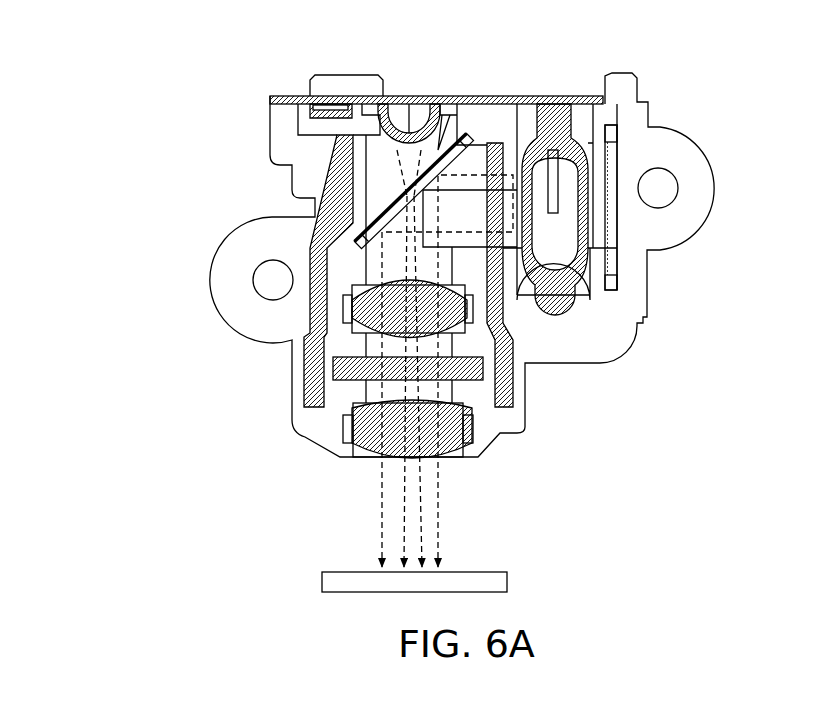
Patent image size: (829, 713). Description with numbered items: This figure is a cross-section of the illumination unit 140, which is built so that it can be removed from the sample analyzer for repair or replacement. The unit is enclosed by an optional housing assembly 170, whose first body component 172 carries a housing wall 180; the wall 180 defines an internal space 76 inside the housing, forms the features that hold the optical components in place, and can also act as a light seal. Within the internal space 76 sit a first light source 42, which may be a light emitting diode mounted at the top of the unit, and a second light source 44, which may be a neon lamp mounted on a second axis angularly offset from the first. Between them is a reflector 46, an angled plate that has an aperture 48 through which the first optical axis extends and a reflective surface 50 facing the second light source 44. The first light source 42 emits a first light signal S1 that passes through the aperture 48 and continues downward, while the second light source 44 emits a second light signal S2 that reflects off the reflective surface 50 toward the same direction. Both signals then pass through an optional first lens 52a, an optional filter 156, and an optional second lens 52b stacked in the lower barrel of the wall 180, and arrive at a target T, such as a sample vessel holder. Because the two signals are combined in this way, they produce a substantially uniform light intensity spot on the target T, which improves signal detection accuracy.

The illumination unit 140 is at (250, 63).
The housing assembly 170 is at (263, 137).
The first body component 172 is at (257, 324).
The housing wall 180 is at (303, 388).
The first light source 42 is at (413, 107).
The reflector 46 is at (391, 199).
The reflective surface 50 is at (383, 241).
The aperture 48 is at (422, 208).
The internal space 76 is at (501, 173).
The second light source 44 is at (574, 126).
The first lens 52a is at (470, 312).
The filter 156 is at (474, 381).
The second lens 52b is at (448, 443).
The first light signal S1 is at (382, 497).
The second light signal S2 is at (403, 533).
The target T is at (482, 580).